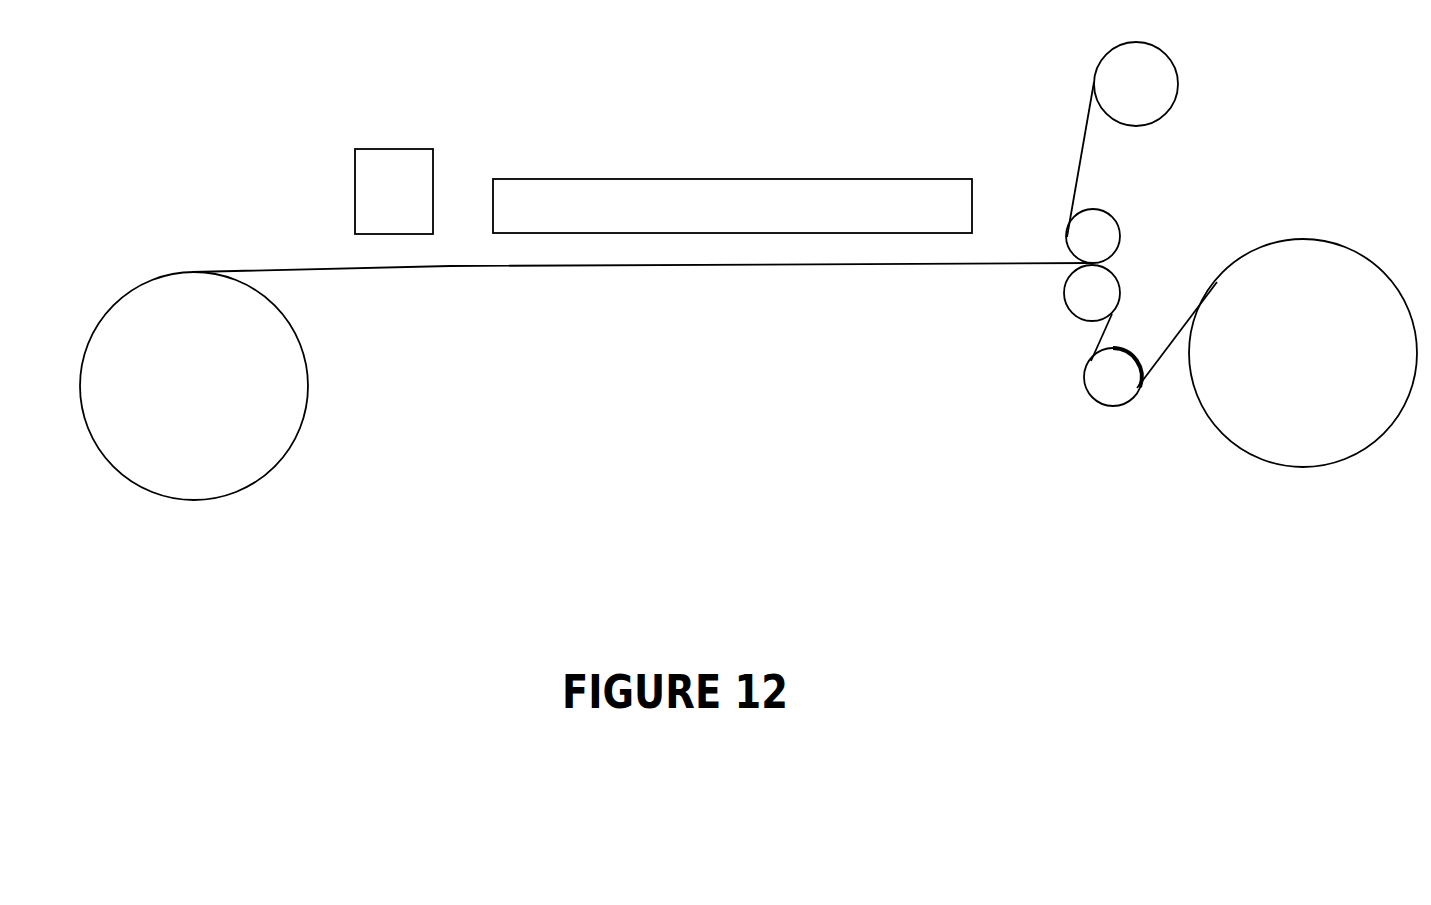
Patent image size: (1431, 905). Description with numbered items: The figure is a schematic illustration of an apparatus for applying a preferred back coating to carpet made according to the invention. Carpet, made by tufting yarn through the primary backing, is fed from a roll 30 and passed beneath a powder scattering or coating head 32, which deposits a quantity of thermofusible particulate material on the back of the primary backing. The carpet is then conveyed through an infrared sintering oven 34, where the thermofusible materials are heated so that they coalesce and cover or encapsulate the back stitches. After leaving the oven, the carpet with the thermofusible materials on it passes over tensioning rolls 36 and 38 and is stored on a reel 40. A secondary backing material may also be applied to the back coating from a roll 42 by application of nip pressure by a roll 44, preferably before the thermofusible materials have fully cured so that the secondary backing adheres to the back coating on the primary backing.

The roll 30 is at (315, 364).
The powder scattering or coating head 32 is at (413, 172).
The infrared sintering oven 34 is at (573, 200).
The tensioning roll 36 is at (1119, 278).
The tensioning roll 38 is at (1121, 343).
The reel 40 is at (1338, 241).
The roll 42 is at (1179, 48).
The roll 44 is at (1118, 208).